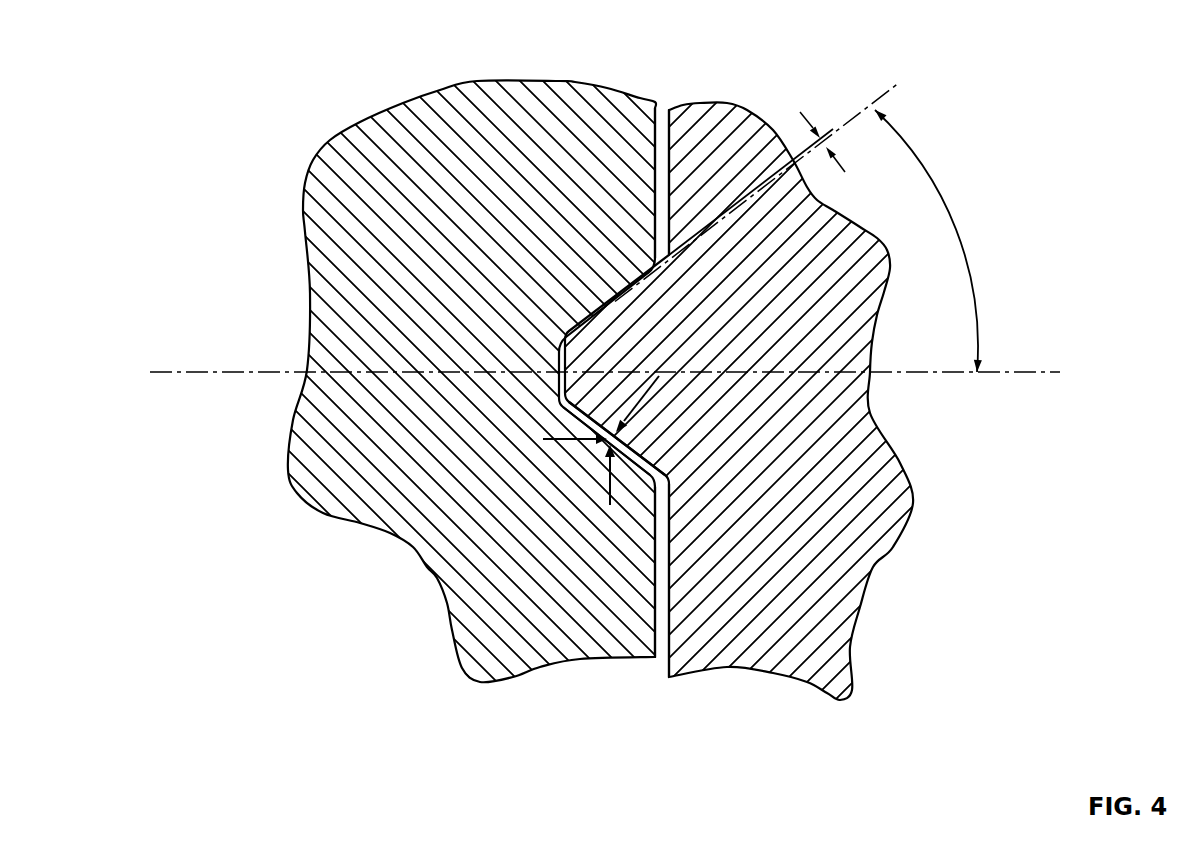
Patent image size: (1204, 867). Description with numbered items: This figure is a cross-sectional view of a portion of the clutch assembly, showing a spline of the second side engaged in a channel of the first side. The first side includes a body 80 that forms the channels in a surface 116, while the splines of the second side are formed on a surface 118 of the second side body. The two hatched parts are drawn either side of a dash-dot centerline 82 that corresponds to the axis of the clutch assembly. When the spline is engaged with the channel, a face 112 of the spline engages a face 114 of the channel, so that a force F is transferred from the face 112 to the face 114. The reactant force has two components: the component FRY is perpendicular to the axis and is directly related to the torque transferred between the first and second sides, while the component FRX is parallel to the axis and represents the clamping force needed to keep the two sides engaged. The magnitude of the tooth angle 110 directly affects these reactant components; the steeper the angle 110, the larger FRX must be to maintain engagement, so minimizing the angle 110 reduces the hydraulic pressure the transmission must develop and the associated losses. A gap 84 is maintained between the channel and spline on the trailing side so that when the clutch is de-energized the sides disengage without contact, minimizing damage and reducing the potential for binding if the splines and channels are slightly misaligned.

The body 80 is at (347, 253).
The longitudinal axis 82 is at (249, 372).
The gap 84 is at (827, 139).
The tooth angle 110 is at (960, 227).
The face 112 is at (584, 419).
The face 114 is at (575, 403).
The surface 116 is at (658, 112).
The surface 118 is at (663, 665).
The force F is at (648, 393).
The reactant force component parallel to the axis FRX is at (608, 482).
The reactant force component perpendicular to the axis FRY is at (563, 441).